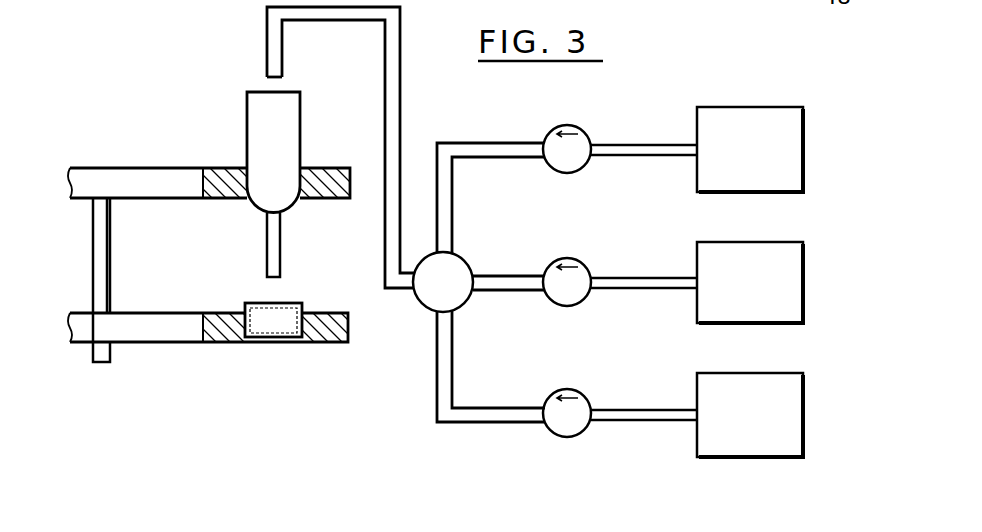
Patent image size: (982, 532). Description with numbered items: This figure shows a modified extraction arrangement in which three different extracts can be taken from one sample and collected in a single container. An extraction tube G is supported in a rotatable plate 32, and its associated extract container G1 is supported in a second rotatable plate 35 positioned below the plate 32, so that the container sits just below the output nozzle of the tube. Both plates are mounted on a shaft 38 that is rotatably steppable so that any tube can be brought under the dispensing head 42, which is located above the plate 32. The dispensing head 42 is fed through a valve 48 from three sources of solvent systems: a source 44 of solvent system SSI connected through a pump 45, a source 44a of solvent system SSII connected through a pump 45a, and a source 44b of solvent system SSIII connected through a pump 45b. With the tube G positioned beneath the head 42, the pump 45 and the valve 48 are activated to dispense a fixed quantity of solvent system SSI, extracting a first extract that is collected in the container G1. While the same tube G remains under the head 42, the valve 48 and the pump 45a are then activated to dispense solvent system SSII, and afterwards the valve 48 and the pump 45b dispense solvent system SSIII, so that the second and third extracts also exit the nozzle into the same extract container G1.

The dispensing head 42 is at (267, 61).
The extraction tube G is at (247, 116).
The rotatable plate 32 is at (238, 170).
The shaft 38 is at (103, 256).
The second rotatable plate 35 is at (225, 333).
The extract container G1 is at (245, 306).
The valve 48 is at (462, 262).
The pump 45 is at (585, 167).
The pump 45a is at (583, 300).
The pump 45b is at (581, 428).
The source of solvent system 44 is at (803, 180).
The source of solvent system 44a is at (803, 289).
The source of solvent system 44b is at (803, 440).